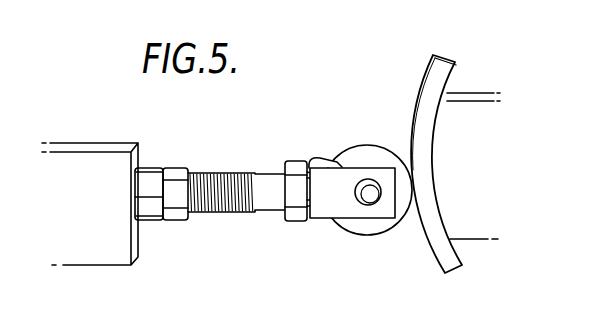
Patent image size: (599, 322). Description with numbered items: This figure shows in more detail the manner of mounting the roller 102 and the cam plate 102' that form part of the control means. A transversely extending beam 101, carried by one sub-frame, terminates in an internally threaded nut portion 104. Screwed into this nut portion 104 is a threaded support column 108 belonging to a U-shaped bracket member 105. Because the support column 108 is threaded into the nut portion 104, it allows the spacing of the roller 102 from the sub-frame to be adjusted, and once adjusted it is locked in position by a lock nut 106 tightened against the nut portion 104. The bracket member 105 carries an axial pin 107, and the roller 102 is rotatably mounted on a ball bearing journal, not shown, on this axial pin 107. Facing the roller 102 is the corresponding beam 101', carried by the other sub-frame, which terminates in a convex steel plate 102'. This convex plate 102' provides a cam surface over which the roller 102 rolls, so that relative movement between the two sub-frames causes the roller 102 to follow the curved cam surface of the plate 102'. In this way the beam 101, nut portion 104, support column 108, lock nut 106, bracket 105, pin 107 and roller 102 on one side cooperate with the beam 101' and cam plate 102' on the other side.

The beam 101 is at (90, 190).
The beam 101' is at (482, 187).
The roller 102 is at (366, 177).
The convex steel plate 102' is at (412, 164).
The internally threaded nut portion 104 is at (144, 170).
The U-shaped bracket member 105 is at (324, 209).
The lock nut 106 is at (176, 167).
The axial pin 107 is at (371, 204).
The threaded support column 108 is at (203, 212).